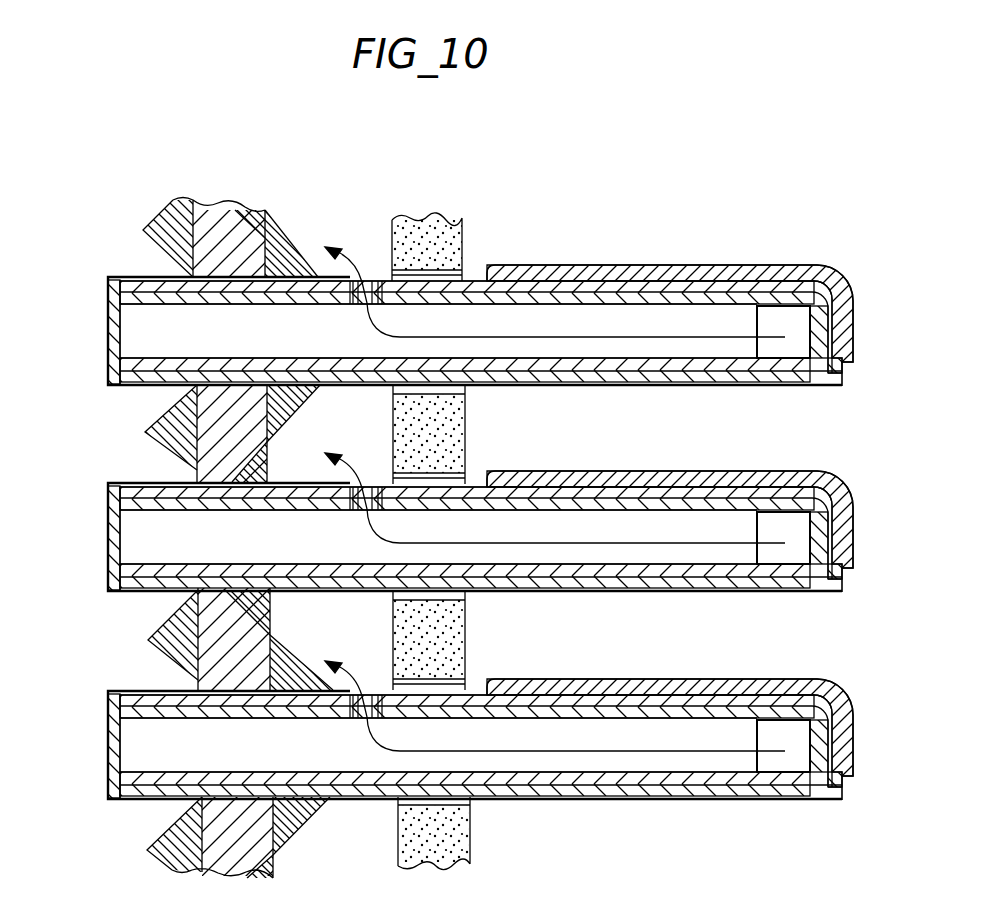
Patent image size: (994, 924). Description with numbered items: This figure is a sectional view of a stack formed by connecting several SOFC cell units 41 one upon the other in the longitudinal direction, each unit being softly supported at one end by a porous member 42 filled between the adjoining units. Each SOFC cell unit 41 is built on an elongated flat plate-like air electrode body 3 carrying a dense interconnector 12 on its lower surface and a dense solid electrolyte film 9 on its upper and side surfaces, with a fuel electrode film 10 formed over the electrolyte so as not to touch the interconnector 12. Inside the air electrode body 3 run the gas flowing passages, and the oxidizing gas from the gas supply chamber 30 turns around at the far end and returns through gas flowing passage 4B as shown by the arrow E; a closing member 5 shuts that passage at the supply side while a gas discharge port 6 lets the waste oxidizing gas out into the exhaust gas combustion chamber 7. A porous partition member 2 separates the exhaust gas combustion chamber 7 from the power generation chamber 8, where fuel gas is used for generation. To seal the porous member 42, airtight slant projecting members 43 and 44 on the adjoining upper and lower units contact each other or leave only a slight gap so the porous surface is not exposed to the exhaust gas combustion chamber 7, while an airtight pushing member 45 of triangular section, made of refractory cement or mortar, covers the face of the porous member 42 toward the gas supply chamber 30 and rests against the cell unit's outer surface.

The porous partition member 2 is at (437, 236).
The air electrode body 3 is at (722, 298).
The gas flowing passage 4B is at (636, 350).
The closing member 5 is at (112, 312).
The gas discharge port 6 is at (372, 280).
The exhaust gas combustion chamber 7 is at (346, 439).
The power generation chamber 8 is at (585, 226).
The solid electrolyte film 9 is at (833, 313).
The fuel electrode film 10 is at (830, 277).
The interconnector 12 is at (728, 378).
The gas supply chamber 30 is at (80, 454).
The SOFC cell unit 41 is at (789, 243).
The porous member 42 is at (228, 233).
The airtight slant projecting member 43 is at (285, 250).
The airtight slant projecting member 44 is at (250, 590).
The airtight pushing member 45 is at (165, 424).
The arrow indicating oxidizing gas flow E is at (553, 338).